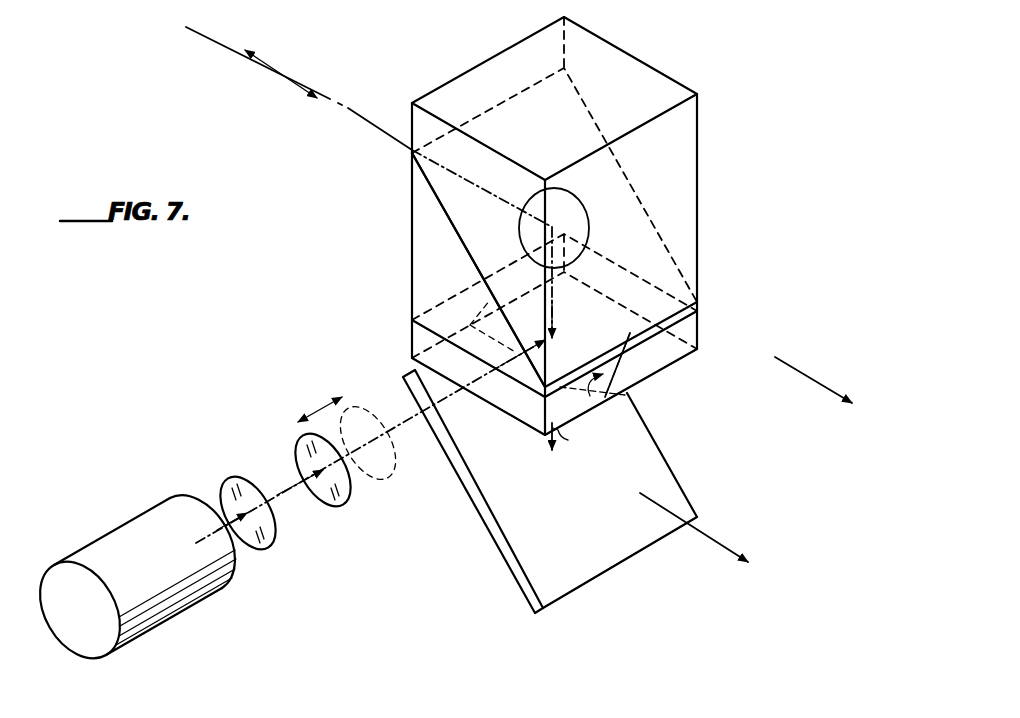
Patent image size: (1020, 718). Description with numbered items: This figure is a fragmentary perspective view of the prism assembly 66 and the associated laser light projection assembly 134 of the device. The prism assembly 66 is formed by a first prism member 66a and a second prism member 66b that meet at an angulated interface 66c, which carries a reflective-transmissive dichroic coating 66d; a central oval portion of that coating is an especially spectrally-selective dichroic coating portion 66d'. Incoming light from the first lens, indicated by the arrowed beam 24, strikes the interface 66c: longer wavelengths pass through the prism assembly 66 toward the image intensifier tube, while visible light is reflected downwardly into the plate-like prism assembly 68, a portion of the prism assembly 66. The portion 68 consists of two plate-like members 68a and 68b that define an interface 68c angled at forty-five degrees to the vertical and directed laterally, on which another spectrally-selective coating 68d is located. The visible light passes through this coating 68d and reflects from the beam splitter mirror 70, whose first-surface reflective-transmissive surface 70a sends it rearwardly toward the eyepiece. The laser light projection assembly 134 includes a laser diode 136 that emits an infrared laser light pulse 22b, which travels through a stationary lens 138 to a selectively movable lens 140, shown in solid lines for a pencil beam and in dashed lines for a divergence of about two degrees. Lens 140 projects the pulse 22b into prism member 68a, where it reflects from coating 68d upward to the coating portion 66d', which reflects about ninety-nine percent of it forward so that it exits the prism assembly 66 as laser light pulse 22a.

The light beam 24 is at (245, 60).
The laser light pulse 22a is at (317, 88).
The prism assembly 66 is at (715, 80).
The first prism member 66a is at (690, 172).
The second prism member 66b is at (413, 228).
The angulated interface 66c is at (457, 243).
The dichroic coating 66d is at (526, 227).
The spectrally-selective dichroic coating portion 66d' is at (581, 228).
The plate-like prism assembly 68 is at (410, 340).
The plate-like member 68a is at (522, 413).
The plate-like member 68b is at (697, 327).
The interface 68c is at (628, 352).
The coating 68d is at (623, 392).
The beam splitter mirror 70 is at (492, 528).
The first-surface reflective-transmissive surface 70a is at (545, 552).
The laser light projection assembly 134 is at (284, 506).
The laser diode 136 is at (125, 525).
The stationary lens 138 is at (230, 480).
The selectively movable lens 140 is at (382, 478).
The laser light pulse 22b is at (230, 532).